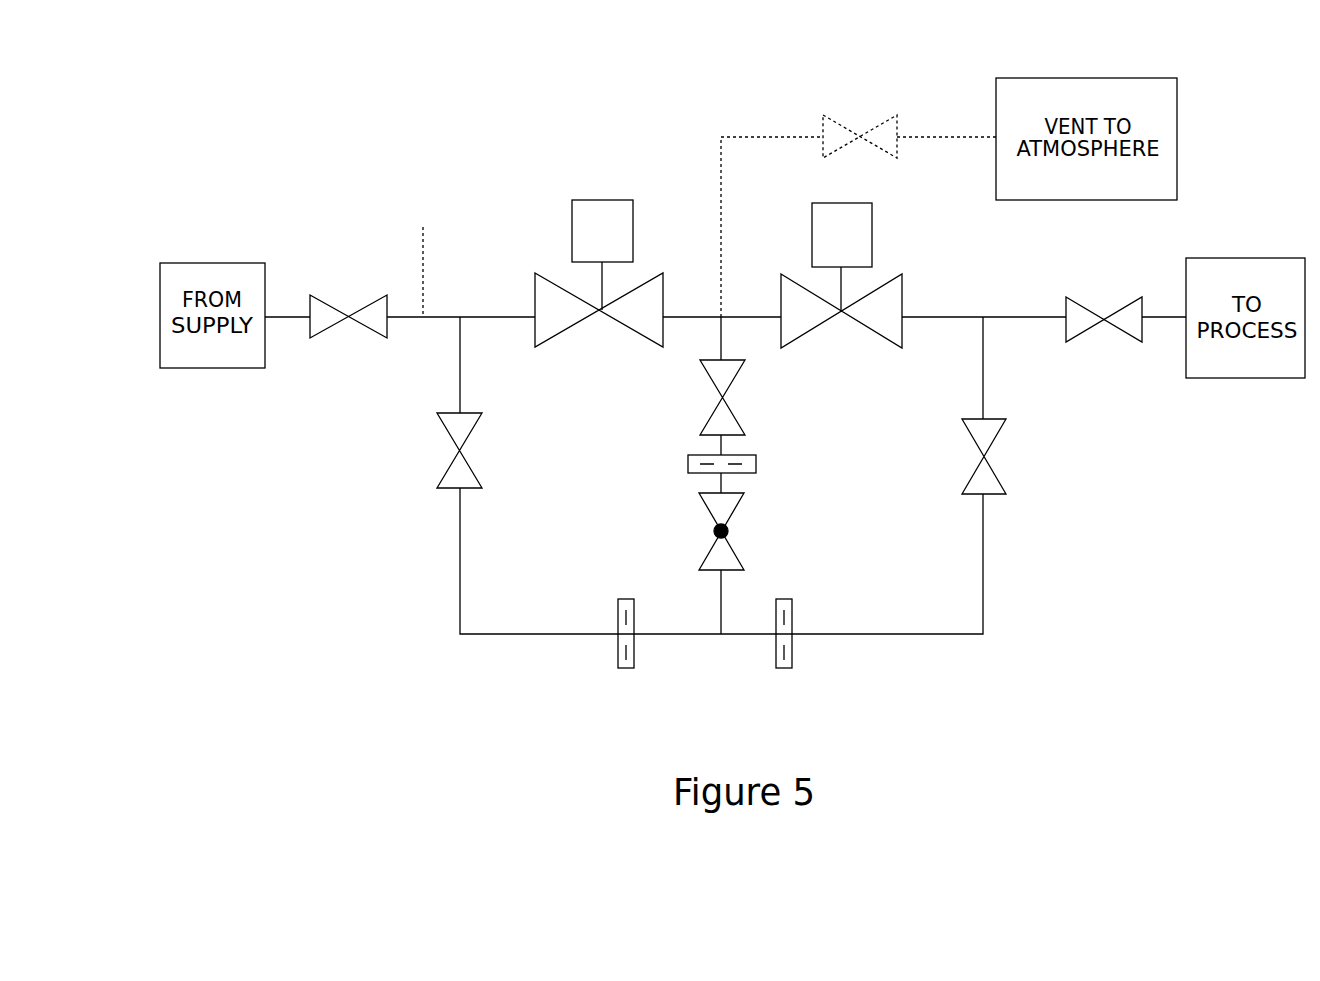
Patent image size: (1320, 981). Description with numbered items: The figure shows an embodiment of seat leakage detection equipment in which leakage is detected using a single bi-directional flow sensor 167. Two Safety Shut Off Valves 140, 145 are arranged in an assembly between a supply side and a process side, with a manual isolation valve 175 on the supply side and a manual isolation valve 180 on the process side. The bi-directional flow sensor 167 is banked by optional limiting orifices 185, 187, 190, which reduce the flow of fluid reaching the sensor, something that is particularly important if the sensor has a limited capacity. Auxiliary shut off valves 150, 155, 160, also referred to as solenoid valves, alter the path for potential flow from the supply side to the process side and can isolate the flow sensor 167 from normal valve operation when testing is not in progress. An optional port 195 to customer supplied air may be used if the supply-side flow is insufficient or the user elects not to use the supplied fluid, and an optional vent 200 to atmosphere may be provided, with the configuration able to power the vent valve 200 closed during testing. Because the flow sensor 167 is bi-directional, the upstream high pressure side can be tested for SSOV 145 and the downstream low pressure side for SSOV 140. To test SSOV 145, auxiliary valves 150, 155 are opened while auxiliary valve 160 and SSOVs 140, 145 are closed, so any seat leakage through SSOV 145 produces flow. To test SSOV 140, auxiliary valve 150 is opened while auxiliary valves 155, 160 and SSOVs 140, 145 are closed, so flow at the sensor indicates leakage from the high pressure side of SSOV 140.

The Safety Shut Off Valve 140 is at (533, 268).
The Safety Shut Off Valve 145 is at (903, 272).
The auxiliary shut off valve 150 is at (440, 490).
The auxiliary shut off valve 155 is at (707, 388).
The auxiliary shut off valve 160 is at (1007, 420).
The bi-directional flow sensor 167 is at (712, 547).
The manual isolation valve 175 is at (378, 340).
The manual isolation valve 180 is at (1067, 295).
The limiting orifice 185 is at (615, 650).
The limiting orifice 187 is at (687, 465).
The limiting orifice 190 is at (773, 660).
The port to customer supplied air 195 is at (422, 228).
The vent to atmosphere 200 is at (897, 115).